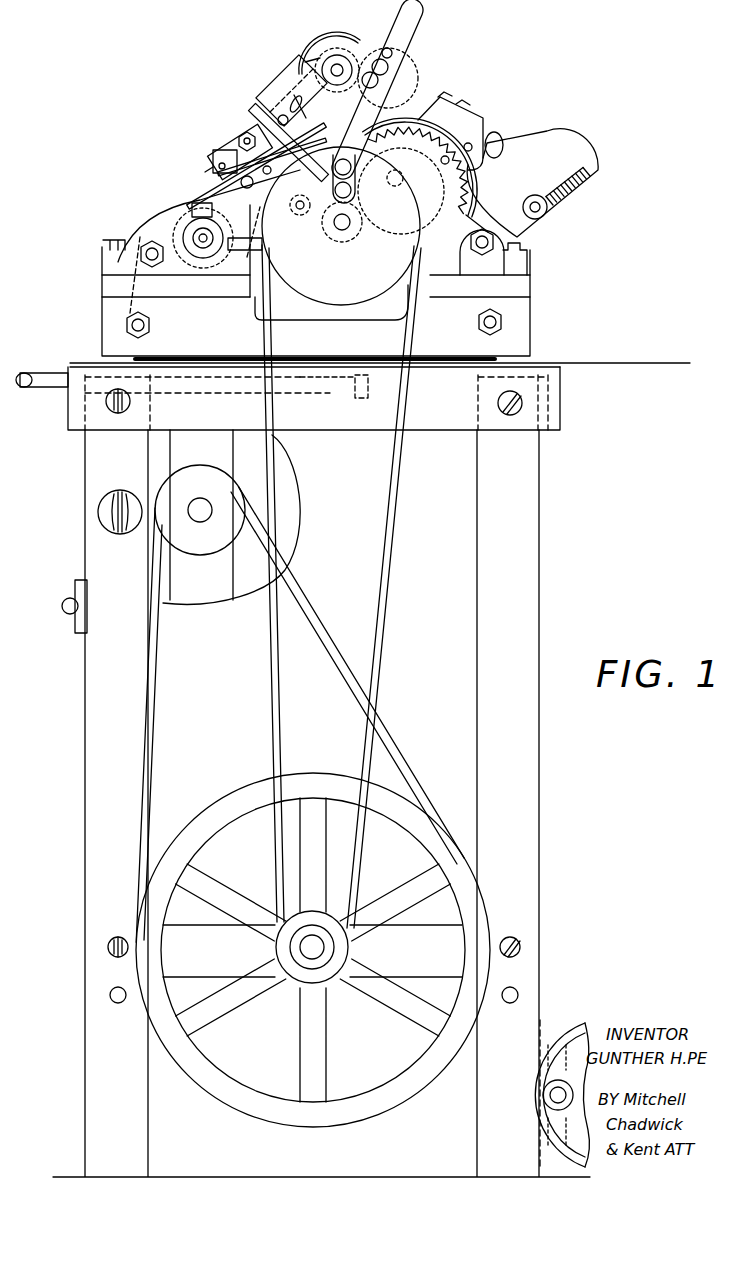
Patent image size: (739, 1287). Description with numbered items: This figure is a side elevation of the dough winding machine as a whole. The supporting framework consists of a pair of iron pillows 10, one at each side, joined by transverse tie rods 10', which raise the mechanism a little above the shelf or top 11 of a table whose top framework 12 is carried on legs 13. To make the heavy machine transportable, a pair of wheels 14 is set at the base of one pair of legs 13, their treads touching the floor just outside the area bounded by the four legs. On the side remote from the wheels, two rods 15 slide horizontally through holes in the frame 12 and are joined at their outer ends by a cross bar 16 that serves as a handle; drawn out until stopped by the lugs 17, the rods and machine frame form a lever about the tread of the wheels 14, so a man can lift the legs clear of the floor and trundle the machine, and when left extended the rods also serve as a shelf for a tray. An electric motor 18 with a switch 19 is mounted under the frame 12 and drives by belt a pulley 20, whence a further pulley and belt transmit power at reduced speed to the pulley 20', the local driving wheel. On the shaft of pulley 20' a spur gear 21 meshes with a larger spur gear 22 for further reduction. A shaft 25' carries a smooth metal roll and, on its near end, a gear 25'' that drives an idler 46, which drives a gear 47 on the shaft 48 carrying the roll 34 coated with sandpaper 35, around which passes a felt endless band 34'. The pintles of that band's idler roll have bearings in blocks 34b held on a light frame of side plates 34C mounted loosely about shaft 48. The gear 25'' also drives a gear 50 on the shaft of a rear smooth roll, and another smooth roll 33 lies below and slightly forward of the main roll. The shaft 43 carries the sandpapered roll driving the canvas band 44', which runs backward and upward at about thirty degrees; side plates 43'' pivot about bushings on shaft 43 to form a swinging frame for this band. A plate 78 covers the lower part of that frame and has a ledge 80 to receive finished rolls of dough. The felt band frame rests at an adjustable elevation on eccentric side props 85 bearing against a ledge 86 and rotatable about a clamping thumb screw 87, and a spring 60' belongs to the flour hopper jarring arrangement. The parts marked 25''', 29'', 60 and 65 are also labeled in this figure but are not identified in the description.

The iron pillows 10 is at (337, 280).
The transverse tie rods 10' is at (353, 309).
The table top 11 is at (655, 363).
The top framework 12 is at (562, 400).
The legs 13 is at (530, 525).
The wheels 14 is at (570, 1025).
The rods 15 is at (52, 390).
The cross bar 16 is at (22, 378).
The lugs 17 is at (356, 397).
The electric motor 18 is at (298, 522).
The switch 19 is at (112, 512).
The pulley 20 is at (313, 945).
The driving pulley 20' is at (341, 586).
The spur gear 21 is at (330, 238).
The spur gear 22 is at (392, 225).
The shaft 25' is at (420, 139).
The gear 25'' is at (470, 153).
The roller disk 25''' is at (341, 226).
The arm 29'' is at (553, 202).
The roll 33 is at (305, 190).
The roll 34 is at (333, 47).
The endless band 34' is at (281, 112).
The blocks 34b is at (246, 132).
The side plates 34C is at (290, 107).
The sandpaper 35 is at (318, 46).
The shaft 43 is at (203, 262).
The side plates 43'' is at (214, 152).
The canvas belt 44' is at (239, 186).
The idler 46 is at (380, 84).
The gear 47 is at (346, 50).
The shaft 48 is at (310, 60).
The gear 50 is at (470, 120).
The roller 60 is at (535, 207).
The spring 60' is at (582, 187).
The lever 65 is at (414, 15).
The plate 78 is at (140, 258).
The ledge 80 is at (130, 224).
The side props 85 is at (278, 116).
The ledge 86 is at (292, 98).
The clamping thumb screw 87 is at (290, 107).